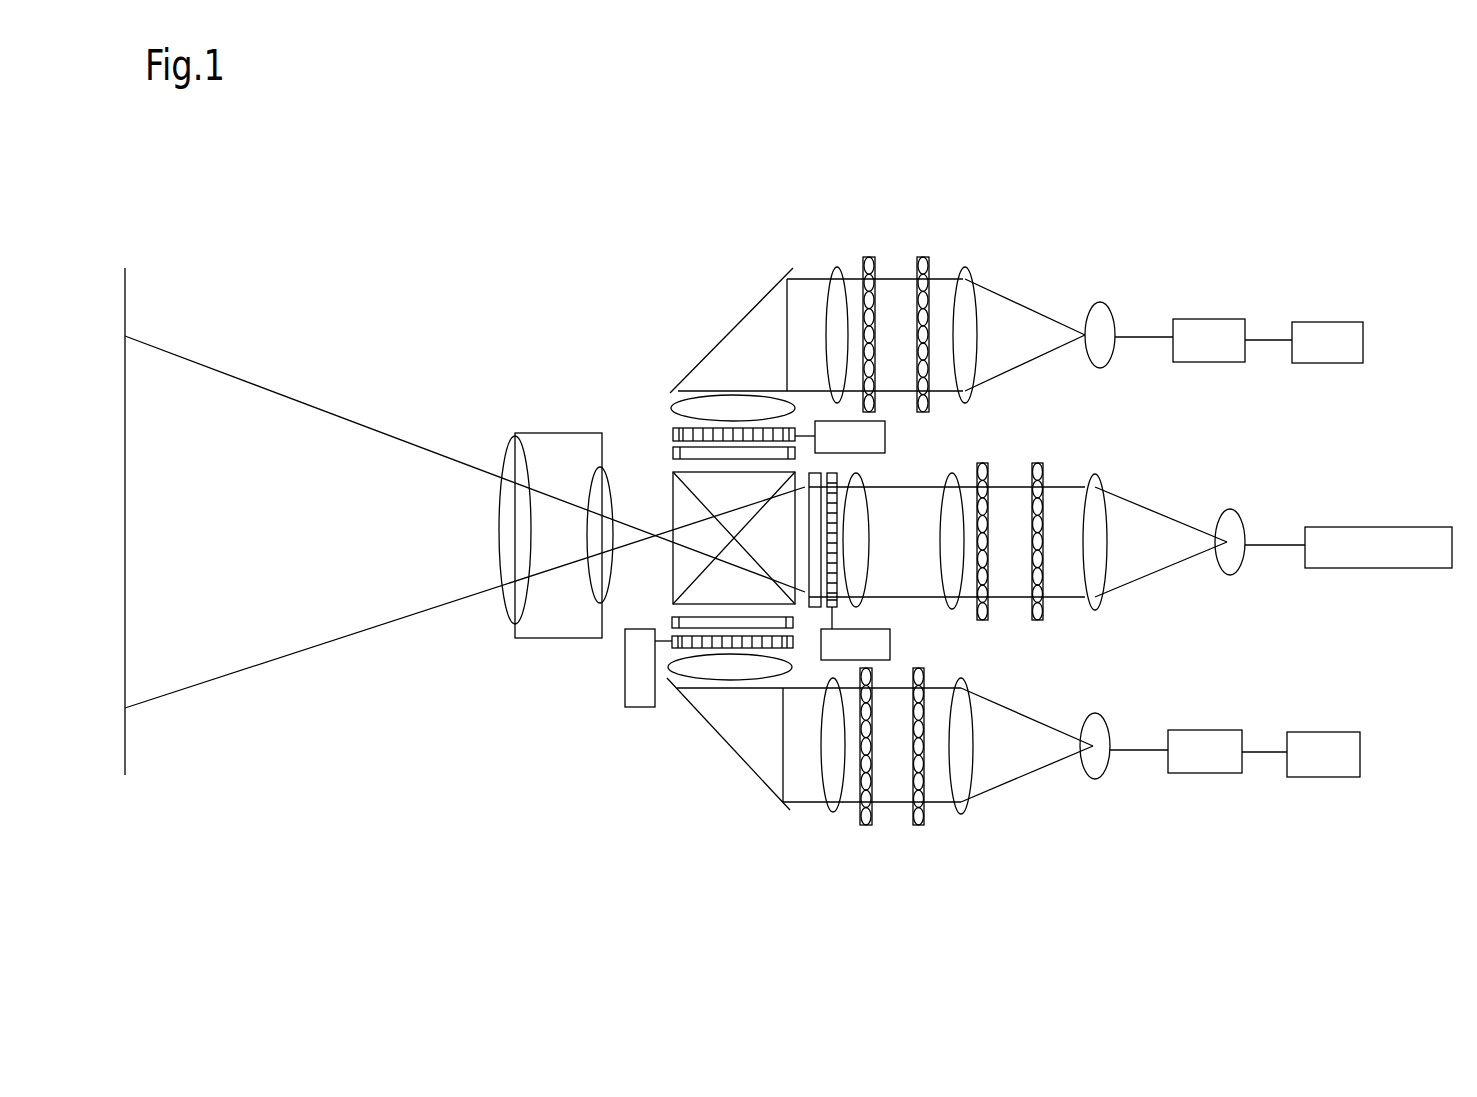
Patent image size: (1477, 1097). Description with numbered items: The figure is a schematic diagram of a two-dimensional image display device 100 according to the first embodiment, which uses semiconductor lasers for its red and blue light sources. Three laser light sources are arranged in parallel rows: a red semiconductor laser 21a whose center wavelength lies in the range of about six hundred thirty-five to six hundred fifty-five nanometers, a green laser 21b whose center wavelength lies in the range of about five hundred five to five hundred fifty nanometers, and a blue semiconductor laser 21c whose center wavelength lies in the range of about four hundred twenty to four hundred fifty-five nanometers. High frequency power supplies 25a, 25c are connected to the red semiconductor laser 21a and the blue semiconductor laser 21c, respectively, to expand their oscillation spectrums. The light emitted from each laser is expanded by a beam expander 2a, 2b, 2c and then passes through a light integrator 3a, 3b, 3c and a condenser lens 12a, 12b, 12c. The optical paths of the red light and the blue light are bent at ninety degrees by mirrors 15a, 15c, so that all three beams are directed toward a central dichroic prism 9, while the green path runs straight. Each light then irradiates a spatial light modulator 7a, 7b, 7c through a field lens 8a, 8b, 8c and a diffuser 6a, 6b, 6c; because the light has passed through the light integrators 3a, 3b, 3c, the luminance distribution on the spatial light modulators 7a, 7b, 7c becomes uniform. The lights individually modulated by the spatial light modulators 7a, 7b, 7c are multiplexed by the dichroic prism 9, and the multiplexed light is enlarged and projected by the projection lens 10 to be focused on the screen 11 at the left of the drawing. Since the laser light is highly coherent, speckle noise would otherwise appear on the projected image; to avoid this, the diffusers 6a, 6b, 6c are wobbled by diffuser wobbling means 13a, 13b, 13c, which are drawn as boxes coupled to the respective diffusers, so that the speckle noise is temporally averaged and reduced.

The two-dimensional image display device 100 is at (543, 243).
The screen 11 is at (127, 295).
The projection lens 10 is at (527, 432).
The dichroic prism 9 is at (670, 555).
The mirror 15a is at (761, 301).
The diffuser 6a is at (672, 433).
The field lens 8a is at (672, 412).
The spatial light modulator 7a is at (672, 455).
The diffuser wobbling means 13a is at (886, 438).
The condenser lens 12a is at (835, 268).
The light integrator 3a is at (933, 250).
The beam expander 2a is at (1107, 264).
The red semiconductor laser 21a is at (1195, 318).
The high frequency power supply 25a is at (1325, 322).
The spatial light modulator 7b is at (820, 577).
The field lens 8b is at (866, 500).
The diffuser 6b is at (840, 522).
The diffuser wobbling means 13b is at (890, 642).
The condenser lens 12b is at (955, 610).
The light integrator 3b is at (1047, 456).
The beam expander 2b is at (1240, 468).
The green laser 21b is at (1362, 527).
The spatial light modulator 7c is at (672, 622).
The field lens 8c is at (697, 682).
The diffuser wobbling means 13c is at (625, 693).
The diffuser 6c is at (668, 672).
The mirror 15c is at (753, 778).
The condenser lens 12c is at (820, 812).
The light integrator 3c is at (935, 832).
The beam expander 2c is at (1100, 825).
The blue semiconductor laser 21c is at (1226, 730).
The high frequency power supply 25c is at (1352, 732).